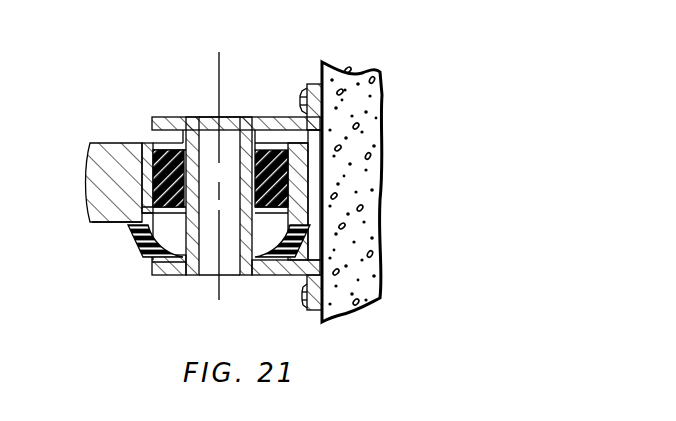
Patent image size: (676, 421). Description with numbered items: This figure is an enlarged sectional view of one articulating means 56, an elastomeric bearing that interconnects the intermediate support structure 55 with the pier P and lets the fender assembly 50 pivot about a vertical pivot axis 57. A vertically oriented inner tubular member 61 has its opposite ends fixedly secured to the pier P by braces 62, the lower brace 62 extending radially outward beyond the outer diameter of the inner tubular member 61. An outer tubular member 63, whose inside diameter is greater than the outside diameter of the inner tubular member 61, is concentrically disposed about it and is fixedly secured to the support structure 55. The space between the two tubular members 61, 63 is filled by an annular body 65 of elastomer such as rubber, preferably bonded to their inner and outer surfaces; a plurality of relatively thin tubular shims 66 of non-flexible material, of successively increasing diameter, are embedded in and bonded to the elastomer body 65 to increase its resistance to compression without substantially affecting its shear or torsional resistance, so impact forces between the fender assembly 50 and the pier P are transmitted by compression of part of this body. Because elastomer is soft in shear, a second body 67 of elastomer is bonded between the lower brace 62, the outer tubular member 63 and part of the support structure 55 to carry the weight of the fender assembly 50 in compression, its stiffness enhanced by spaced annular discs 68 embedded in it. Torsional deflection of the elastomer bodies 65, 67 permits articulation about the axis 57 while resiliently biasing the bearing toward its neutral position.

The pier P is at (364, 166).
The fender assembly 50 is at (92, 191).
The intermediate support structure 55 is at (103, 222).
The articulating means 56 is at (179, 115).
The vertical pivot axis 57 is at (219, 68).
The inner tubular member 61 is at (247, 236).
The brace 62 is at (274, 117).
The outer tubular member 63 is at (140, 208).
The annular body of elastomer 65 is at (168, 145).
The tubular shim 66 is at (272, 152).
The body of elastomer 67 is at (147, 263).
The annular disc 68 is at (131, 226).